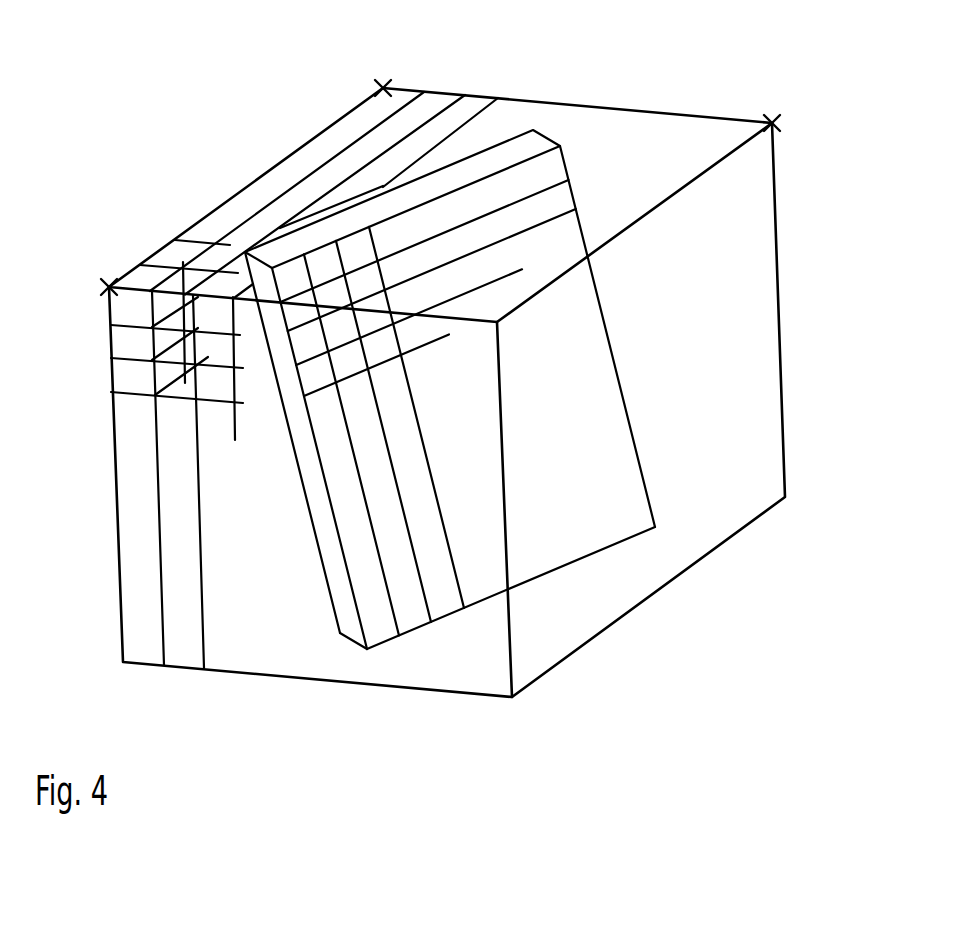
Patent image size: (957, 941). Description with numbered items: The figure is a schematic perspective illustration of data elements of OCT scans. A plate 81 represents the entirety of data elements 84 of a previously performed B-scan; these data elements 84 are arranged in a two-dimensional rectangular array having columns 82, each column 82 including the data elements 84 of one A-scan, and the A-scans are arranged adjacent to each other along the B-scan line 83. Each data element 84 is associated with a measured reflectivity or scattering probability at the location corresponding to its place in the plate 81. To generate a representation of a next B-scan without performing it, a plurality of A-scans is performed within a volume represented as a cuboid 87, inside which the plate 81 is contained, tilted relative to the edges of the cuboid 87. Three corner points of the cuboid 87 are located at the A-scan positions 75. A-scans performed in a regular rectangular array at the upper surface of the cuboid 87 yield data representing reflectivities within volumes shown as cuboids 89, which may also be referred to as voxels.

The A-scan positions 75 is at (110, 285).
The plate 81 is at (633, 397).
The columns 82 is at (338, 226).
The B-scan line 83 is at (513, 137).
The data elements 84 is at (259, 276).
The cuboid 87 is at (108, 555).
The cuboids 89 is at (127, 308).